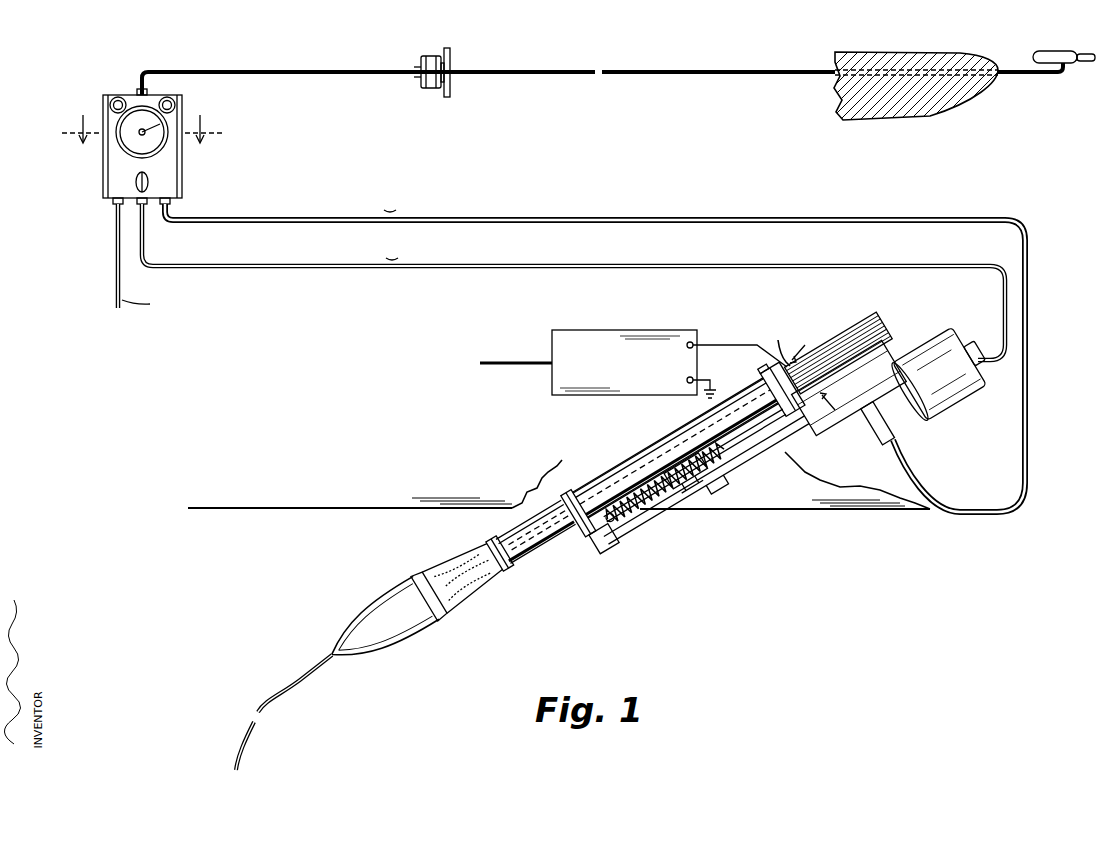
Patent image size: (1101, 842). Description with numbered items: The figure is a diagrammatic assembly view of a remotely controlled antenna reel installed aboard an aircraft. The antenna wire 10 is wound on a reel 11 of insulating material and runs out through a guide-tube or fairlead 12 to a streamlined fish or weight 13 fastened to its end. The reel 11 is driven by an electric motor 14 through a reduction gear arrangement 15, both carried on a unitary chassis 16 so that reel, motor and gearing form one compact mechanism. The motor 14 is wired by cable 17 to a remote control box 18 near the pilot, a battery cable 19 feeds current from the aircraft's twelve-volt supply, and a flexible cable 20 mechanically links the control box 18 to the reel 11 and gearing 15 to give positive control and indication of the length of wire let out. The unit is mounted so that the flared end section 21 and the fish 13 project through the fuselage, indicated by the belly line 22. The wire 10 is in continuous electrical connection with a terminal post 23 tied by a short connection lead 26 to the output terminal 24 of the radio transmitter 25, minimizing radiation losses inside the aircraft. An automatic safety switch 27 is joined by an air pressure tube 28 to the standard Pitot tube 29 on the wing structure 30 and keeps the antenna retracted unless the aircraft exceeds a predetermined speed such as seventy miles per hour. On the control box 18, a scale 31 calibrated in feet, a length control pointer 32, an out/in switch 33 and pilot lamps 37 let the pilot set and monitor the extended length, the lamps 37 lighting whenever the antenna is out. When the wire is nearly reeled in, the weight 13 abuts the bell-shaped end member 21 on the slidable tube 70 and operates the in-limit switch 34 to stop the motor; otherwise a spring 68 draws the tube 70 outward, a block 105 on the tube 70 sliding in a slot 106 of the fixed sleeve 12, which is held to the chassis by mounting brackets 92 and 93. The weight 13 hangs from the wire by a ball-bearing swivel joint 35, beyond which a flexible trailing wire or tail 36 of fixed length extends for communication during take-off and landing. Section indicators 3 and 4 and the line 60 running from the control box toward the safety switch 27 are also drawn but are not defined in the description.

The antenna wire 10 is at (547, 520).
The reel 11 is at (870, 330).
The guide-tube or fairlead 12 is at (624, 464).
The streamline fish or weight 13 is at (404, 648).
The electric motor 14 is at (953, 400).
The reduction gear arrangement 15 is at (880, 432).
The unitary chassis 16 is at (648, 530).
The cable 17 is at (216, 264).
The remote control box 18 is at (103, 191).
The battery cable 19 is at (121, 294).
The flexible cable 20 is at (250, 218).
The flared end section 21 is at (428, 575).
The belly line 22 is at (355, 510).
The terminal post 23 is at (777, 344).
The output terminal 24 is at (693, 342).
The radio transmitter 25 is at (552, 386).
The connection lead 26 is at (757, 345).
The automatic safety switch 27 is at (428, 84).
The air pressure tube 28 is at (545, 70).
The Pitot tube 29 is at (1065, 45).
The wing structure 30 is at (918, 108).
The scale 31 is at (120, 149).
The length control pointer 32 is at (163, 144).
The switch 33 is at (150, 182).
The in-limit switch 34 is at (738, 468).
The ball-bearing swivel joint 35 is at (467, 600).
The flexible trailing wire 36 is at (290, 686).
The pilot lamps 37 is at (118, 97).
The section line 3- 3 is at (141, 127).
The section line 4- 4 is at (817, 375).
The cable to pitot tube 60 is at (272, 72).
The spring 68 is at (618, 540).
The slidable tube 70 is at (510, 570).
The mounting bracket 92 is at (584, 497).
The mounting bracket 93 is at (772, 386).
The block 105 is at (722, 468).
The slot 106 is at (714, 492).